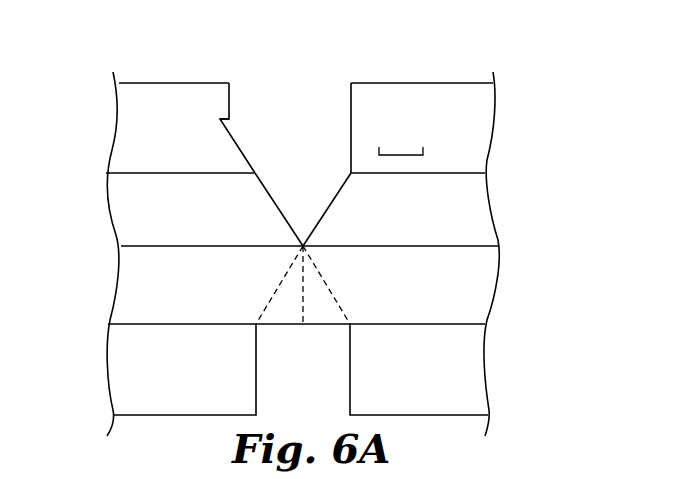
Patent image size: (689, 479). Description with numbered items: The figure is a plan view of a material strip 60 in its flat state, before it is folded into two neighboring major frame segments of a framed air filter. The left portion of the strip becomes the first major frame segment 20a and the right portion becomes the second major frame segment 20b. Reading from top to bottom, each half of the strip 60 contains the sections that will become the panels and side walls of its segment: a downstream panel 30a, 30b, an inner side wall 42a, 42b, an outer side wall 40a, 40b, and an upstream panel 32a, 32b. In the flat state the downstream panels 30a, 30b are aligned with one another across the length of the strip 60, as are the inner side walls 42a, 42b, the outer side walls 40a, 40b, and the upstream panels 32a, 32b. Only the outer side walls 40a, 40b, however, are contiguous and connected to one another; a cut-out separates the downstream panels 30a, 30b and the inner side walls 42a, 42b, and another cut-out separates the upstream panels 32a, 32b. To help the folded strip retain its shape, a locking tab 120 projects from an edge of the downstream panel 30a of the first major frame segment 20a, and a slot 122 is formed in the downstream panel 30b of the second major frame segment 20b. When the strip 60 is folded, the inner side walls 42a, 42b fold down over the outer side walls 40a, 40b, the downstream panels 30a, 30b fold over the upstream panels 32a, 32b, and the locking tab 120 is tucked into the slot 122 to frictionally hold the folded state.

The first material strip 60 is at (512, 56).
The first major frame segment 20a is at (187, 77).
The second major frame segment 20b is at (430, 77).
The downstream panel 30a is at (122, 114).
The downstream panel 30b is at (494, 115).
The inner side wall 42a is at (118, 198).
The inner side wall 42b is at (485, 199).
The outer side wall 40a is at (124, 257).
The outer side wall 40b is at (498, 268).
The upstream panel 32a is at (112, 373).
The upstream panel 32b is at (480, 374).
The locking tab 120 is at (225, 102).
The slot 122 is at (397, 154).